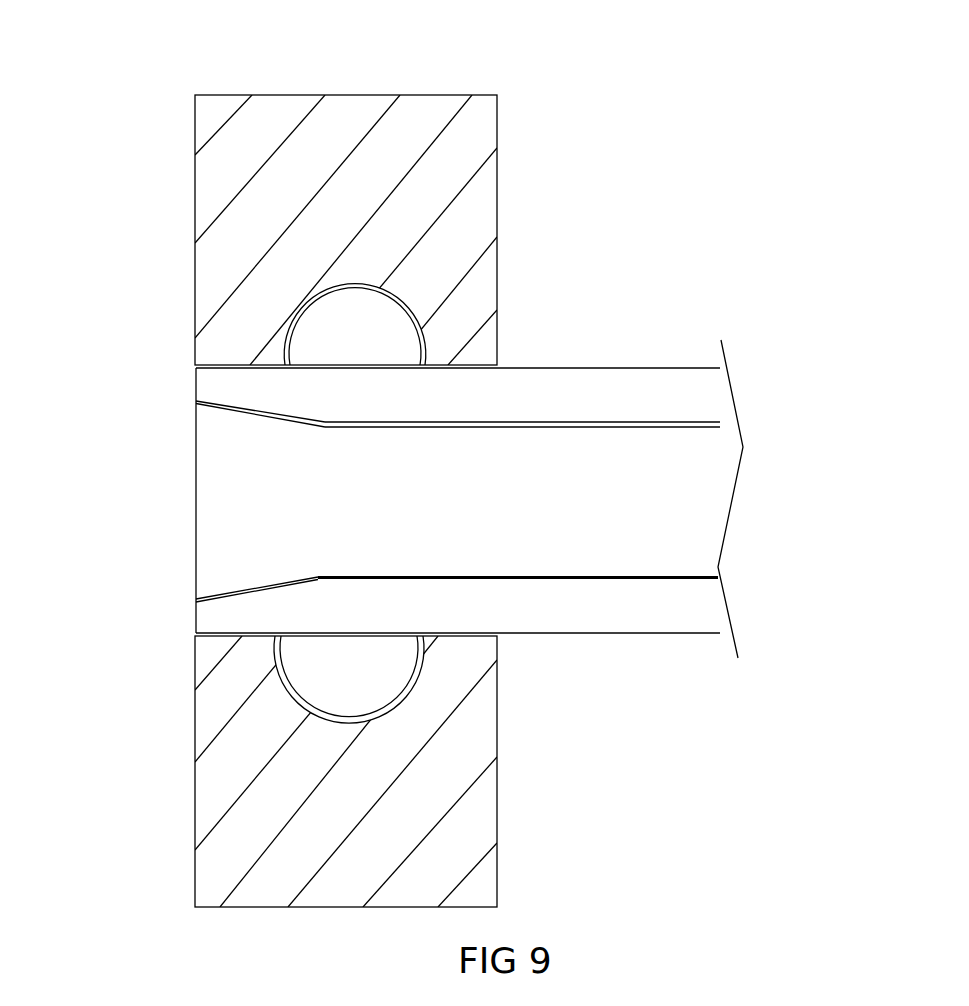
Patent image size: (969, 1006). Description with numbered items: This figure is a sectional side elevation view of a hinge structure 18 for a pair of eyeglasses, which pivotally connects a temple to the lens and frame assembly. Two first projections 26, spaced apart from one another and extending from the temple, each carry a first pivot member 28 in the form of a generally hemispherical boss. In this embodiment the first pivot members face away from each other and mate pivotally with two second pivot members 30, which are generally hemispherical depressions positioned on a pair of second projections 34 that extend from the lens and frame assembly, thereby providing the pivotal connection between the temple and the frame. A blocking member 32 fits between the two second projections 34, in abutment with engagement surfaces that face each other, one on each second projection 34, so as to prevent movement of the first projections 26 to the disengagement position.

The first hinge structure 18 is at (156, 85).
The first projection 26 is at (613, 390).
The first pivot member 28 is at (378, 325).
The second pivot member 30 is at (323, 310).
The blocking member 32 is at (245, 498).
The second projection 34 is at (465, 160).